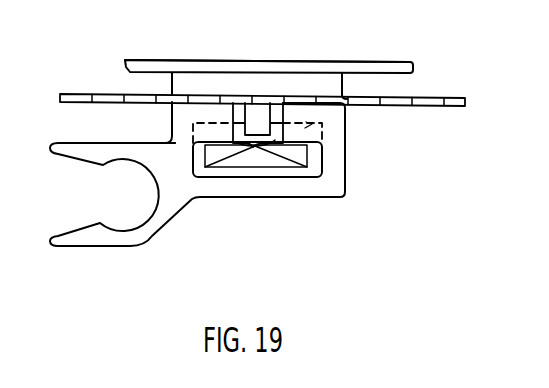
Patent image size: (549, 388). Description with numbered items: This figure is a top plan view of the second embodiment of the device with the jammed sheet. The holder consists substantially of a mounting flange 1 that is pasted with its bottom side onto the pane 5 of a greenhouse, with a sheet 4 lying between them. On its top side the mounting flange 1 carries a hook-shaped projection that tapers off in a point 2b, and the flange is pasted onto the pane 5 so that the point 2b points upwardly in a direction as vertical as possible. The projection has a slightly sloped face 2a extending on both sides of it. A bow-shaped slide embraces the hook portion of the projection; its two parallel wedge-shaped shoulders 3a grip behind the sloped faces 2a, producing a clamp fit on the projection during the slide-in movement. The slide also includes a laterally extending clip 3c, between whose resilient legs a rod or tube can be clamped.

The mounting flange 1 is at (228, 80).
The pane 5 is at (307, 66).
The strip 4 is at (100, 97).
The wedge-shaped shoulders 3a is at (322, 125).
The face 2a is at (307, 167).
The point 2b is at (253, 147).
The clip 3c is at (117, 218).